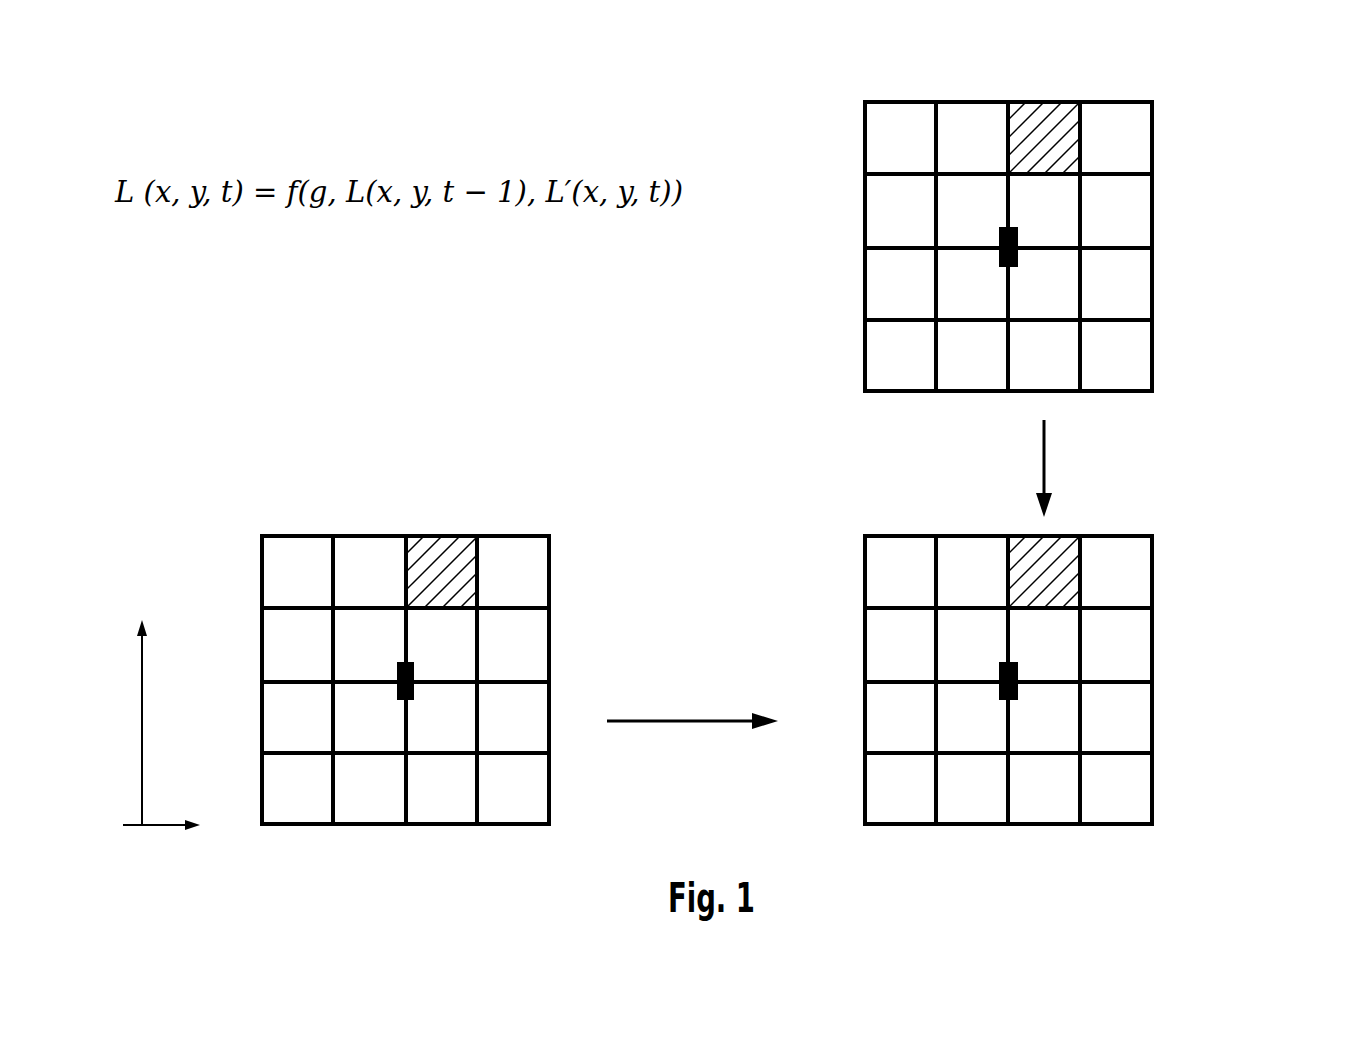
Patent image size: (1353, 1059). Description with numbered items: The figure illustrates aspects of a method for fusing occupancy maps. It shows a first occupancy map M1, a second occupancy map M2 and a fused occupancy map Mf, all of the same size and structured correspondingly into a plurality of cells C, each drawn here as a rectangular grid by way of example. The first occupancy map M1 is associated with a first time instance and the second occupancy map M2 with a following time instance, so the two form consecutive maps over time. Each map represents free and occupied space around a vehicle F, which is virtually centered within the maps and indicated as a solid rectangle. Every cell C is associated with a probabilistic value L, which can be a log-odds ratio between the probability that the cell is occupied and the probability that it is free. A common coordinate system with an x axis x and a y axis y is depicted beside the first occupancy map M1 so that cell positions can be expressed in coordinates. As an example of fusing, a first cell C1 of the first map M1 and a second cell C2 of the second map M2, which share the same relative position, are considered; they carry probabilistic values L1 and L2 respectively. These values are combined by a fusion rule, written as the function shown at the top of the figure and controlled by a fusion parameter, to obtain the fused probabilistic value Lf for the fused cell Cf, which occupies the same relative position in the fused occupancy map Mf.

The first occupancy map M1 is at (411, 624).
The second occupancy map M2 is at (1092, 197).
The fused occupancy map Mf is at (1094, 666).
The first cell C1 is at (487, 523).
The second cell C2 is at (1090, 89).
The fused cell Cf is at (1087, 523).
The first probabilistic value L1 is at (430, 553).
The second probabilistic value L2 is at (1036, 118).
The fused probabilistic value Lf is at (1032, 552).
The cell C is at (514, 640).
The probabilistic value L is at (514, 671).
The vehicle F is at (417, 696).
The x coordinate axis x is at (145, 718).
The y coordinate axis y is at (163, 827).